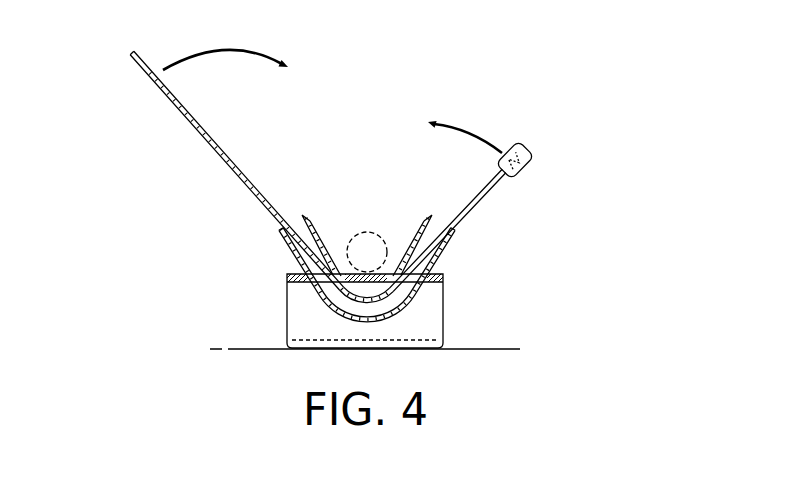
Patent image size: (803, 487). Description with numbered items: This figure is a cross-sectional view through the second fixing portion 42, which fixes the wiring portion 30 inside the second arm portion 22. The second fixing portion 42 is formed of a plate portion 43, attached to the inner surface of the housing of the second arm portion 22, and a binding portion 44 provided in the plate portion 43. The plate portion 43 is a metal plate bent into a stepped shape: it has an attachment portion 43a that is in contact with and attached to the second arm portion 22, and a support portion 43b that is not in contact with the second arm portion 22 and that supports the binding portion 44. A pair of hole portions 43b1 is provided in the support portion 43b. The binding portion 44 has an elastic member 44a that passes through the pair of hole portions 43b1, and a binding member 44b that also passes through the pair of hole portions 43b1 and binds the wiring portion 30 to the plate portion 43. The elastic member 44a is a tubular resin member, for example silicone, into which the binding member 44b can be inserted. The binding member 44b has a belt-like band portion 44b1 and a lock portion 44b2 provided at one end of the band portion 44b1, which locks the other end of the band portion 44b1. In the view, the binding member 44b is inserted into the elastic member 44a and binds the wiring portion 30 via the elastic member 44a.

The second arm portion 22 is at (423, 328).
The wiring portion 30 is at (356, 232).
The second fixing portion 42 is at (270, 262).
The plate portion 43 is at (365, 311).
The attachment portion 43a is at (311, 335).
The support portion 43b is at (421, 244).
The hole portions 43b1 is at (304, 218).
The binding portion 44 is at (338, 176).
The elastic member 44a is at (320, 292).
The binding member 44b is at (480, 202).
The band portion 44b1 is at (201, 131).
The lock portion 44b2 is at (530, 150).